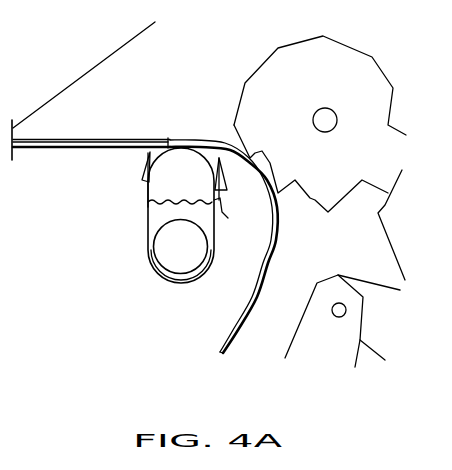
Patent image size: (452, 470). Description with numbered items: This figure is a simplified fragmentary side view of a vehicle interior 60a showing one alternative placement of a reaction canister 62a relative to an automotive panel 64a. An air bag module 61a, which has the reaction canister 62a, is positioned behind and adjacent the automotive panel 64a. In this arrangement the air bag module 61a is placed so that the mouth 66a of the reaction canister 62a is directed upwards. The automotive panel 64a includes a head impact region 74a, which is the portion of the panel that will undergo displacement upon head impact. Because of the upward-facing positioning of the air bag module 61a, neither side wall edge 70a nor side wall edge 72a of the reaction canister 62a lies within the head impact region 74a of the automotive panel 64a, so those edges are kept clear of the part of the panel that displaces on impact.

The vehicle interior 60a is at (111, 105).
The air bag module 61a is at (167, 295).
The reaction canister 62a is at (147, 242).
The automotive panel 64a is at (175, 138).
The mouth 66a is at (146, 156).
The side wall edge 70a is at (201, 193).
The side wall edge 72a is at (150, 198).
The head impact region 74a is at (240, 157).